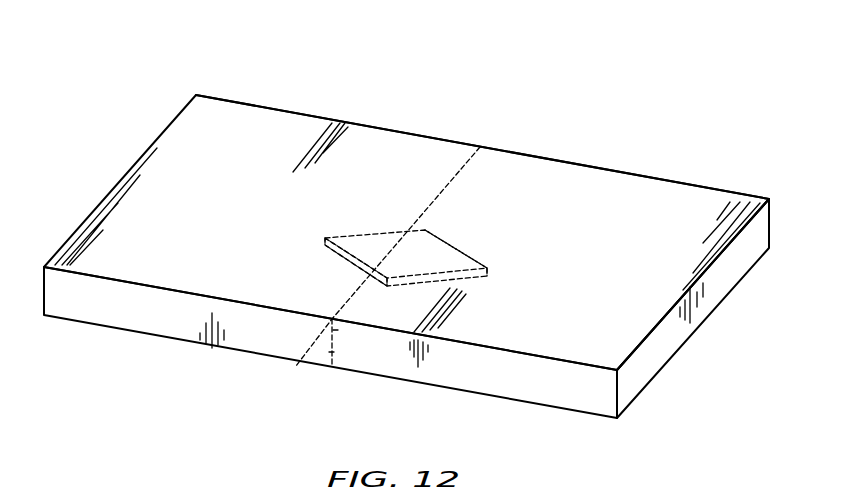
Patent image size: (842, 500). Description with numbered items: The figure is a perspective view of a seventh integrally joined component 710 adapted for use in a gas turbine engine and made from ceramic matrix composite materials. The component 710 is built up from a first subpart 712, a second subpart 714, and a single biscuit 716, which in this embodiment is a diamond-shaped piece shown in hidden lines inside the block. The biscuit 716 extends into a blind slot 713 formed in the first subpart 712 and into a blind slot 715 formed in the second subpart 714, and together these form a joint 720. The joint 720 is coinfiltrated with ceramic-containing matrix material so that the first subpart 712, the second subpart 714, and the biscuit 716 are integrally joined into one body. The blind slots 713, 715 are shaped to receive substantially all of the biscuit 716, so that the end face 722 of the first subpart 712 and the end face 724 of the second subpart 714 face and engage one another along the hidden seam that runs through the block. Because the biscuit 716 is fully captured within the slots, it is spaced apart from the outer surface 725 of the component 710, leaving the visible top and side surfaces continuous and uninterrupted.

The seventh integrally joined component 710 is at (650, 50).
The first subpart 712 is at (240, 88).
The blind slot 713 is at (368, 222).
The second subpart 714 is at (727, 176).
The blind slot 715 is at (453, 244).
The biscuit 716 is at (455, 227).
The joint 720 is at (414, 196).
The end face 722 is at (296, 366).
The end face 724 is at (337, 367).
The outer surface 725 is at (373, 147).